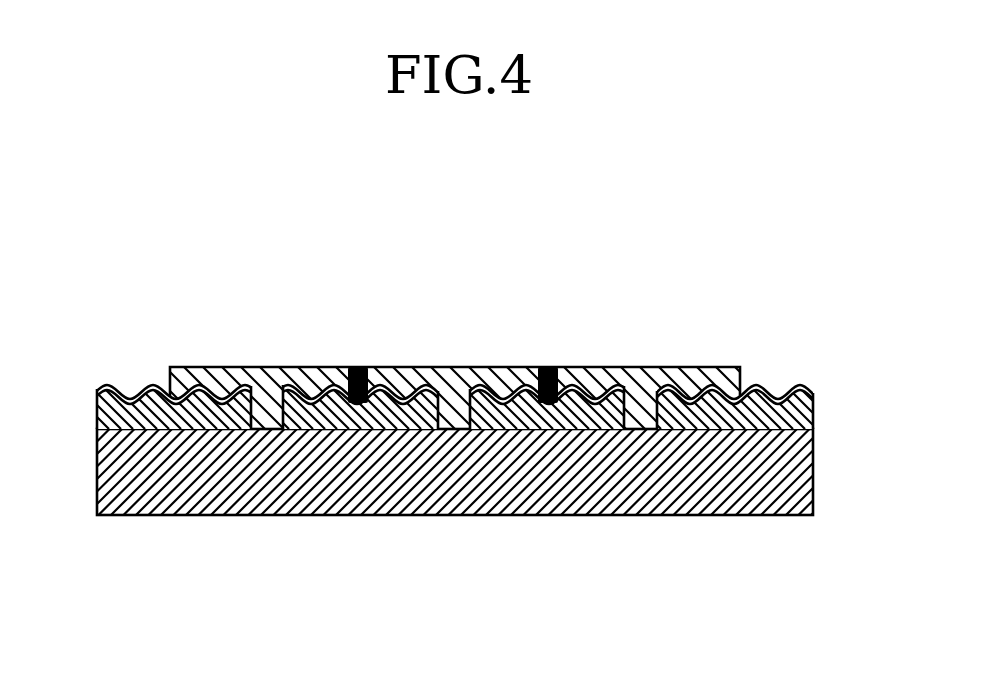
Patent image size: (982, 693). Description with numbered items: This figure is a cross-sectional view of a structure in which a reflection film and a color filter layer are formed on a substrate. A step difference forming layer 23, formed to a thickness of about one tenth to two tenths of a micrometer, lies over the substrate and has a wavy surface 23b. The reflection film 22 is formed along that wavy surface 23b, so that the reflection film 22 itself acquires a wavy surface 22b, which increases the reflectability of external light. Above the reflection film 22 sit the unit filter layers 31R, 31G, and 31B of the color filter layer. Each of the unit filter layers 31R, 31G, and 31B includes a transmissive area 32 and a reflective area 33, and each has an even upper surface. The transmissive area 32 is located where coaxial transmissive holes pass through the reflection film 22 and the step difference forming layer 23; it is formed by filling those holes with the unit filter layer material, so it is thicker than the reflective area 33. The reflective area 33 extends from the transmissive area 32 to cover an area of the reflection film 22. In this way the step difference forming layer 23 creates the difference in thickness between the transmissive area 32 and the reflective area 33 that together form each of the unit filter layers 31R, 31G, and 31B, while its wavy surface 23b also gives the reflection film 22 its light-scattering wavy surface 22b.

The reflection film 22 is at (822, 385).
The wavy surface 22b is at (320, 393).
The step difference forming layer 23 is at (392, 415).
The wavy surface 23b is at (540, 405).
The unit filter layer 31R is at (243, 341).
The unit filter layer 31G is at (453, 351).
The unit filter layer 31B is at (676, 353).
The transmissive area 32 is at (272, 402).
The reflective area 33 is at (220, 356).